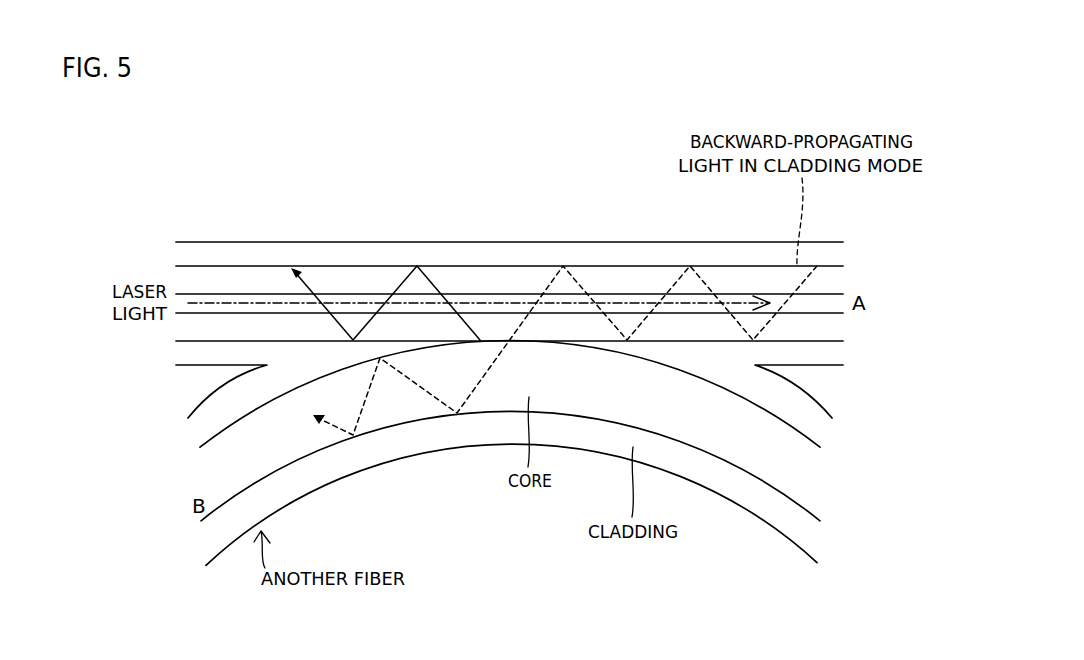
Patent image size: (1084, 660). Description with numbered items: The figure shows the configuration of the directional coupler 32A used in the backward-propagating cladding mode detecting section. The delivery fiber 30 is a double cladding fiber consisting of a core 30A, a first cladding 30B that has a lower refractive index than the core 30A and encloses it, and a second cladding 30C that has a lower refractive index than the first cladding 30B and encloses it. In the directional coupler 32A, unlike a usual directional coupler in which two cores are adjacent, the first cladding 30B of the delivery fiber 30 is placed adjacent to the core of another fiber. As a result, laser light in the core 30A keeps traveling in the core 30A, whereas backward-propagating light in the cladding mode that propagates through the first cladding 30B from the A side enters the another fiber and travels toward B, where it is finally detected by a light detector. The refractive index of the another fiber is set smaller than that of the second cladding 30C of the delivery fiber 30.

The delivery fiber 30 is at (228, 223).
The core 30A is at (640, 298).
The first cladding 30B is at (745, 278).
The second cladding 30C is at (484, 252).
The directional coupler 32A is at (609, 170).